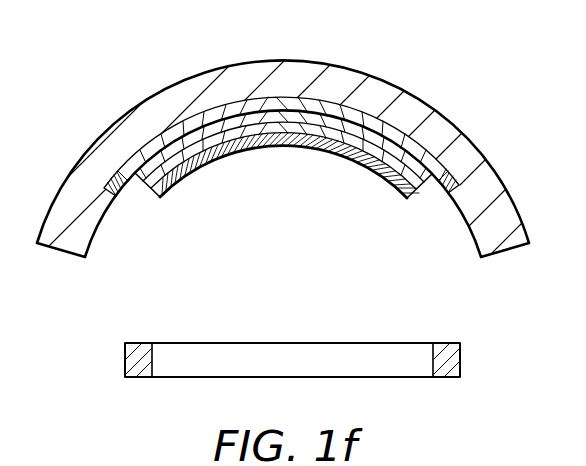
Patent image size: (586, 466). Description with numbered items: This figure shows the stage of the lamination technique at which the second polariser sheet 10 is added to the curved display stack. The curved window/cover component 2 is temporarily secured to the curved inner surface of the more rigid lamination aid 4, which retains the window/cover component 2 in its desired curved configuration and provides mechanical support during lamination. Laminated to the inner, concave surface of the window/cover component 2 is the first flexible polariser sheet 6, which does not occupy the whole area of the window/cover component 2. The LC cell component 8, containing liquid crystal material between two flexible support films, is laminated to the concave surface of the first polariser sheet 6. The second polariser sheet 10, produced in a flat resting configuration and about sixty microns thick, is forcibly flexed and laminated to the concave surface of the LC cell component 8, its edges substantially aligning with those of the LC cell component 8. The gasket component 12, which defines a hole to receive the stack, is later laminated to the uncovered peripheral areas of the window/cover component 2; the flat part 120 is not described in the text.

The lamination aid 4 is at (282, 70).
The window/cover component 2 is at (440, 187).
The first flexible polariser sheet 6 is at (160, 158).
The LC cell component 8 is at (282, 128).
The second polariser sheet 10 is at (387, 178).
The flat substrate 120 is at (290, 350).
The gasket component 12 is at (142, 378).